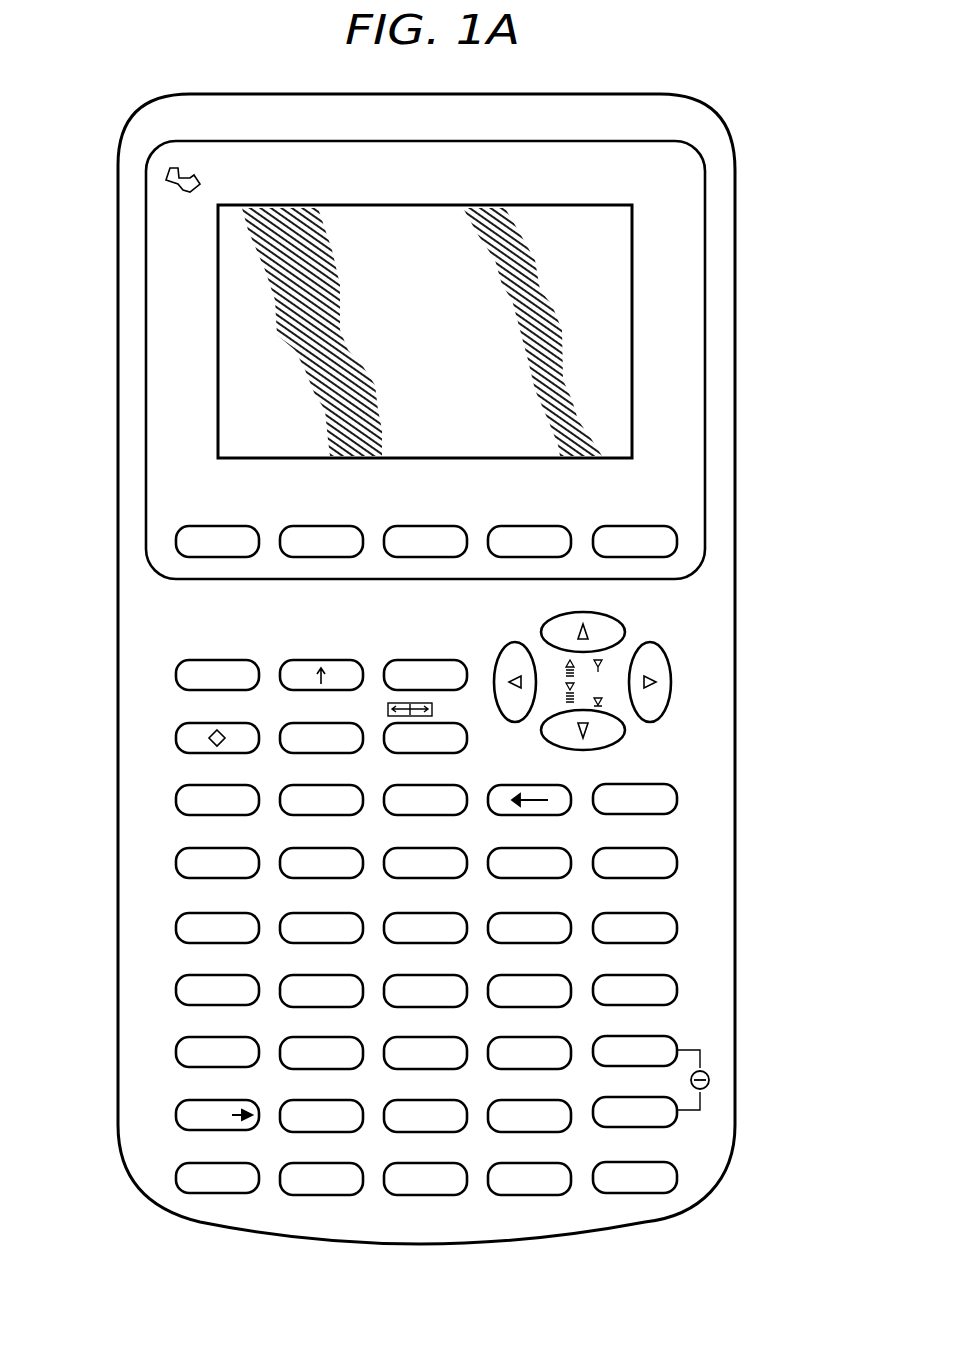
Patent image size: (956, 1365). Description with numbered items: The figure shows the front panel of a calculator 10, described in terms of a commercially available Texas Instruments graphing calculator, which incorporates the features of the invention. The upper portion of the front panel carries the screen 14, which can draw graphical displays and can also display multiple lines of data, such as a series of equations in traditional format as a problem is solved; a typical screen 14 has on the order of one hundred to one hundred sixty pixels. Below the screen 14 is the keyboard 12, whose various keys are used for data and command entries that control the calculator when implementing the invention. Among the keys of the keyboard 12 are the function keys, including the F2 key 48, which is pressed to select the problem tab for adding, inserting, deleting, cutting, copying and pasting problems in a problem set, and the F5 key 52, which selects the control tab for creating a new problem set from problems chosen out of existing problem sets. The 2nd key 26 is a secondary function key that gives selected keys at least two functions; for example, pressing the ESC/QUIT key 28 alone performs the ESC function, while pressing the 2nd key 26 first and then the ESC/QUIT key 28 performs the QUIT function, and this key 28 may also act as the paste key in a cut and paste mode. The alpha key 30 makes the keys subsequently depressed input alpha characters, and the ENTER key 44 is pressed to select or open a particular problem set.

The calculator 10 is at (118, 665).
The keyboard 12 is at (745, 522).
The screen 14 is at (438, 344).
The 2nd key 26 is at (220, 660).
The ESC/QUIT key 28 is at (467, 671).
The alpha key 30 is at (360, 723).
The ENTER key 44 is at (637, 1193).
The F2 key 48 is at (322, 559).
The F5 key 52 is at (615, 525).